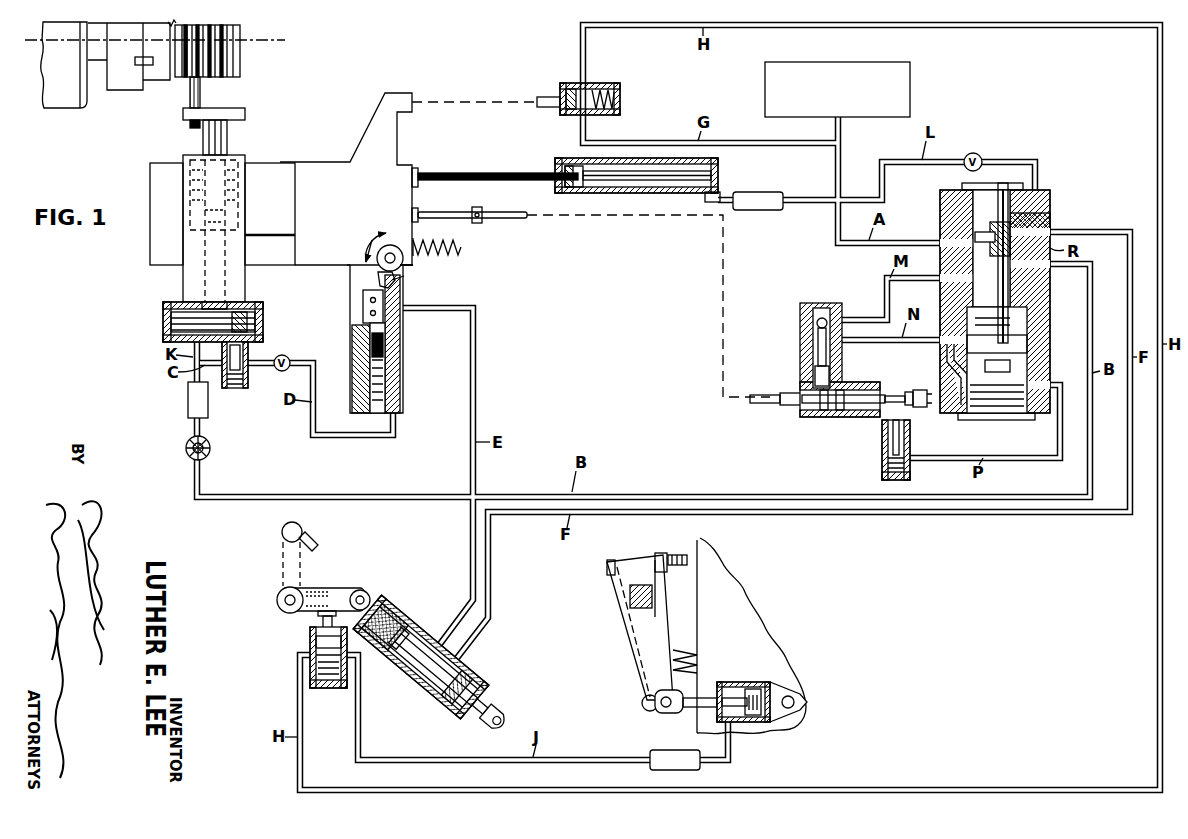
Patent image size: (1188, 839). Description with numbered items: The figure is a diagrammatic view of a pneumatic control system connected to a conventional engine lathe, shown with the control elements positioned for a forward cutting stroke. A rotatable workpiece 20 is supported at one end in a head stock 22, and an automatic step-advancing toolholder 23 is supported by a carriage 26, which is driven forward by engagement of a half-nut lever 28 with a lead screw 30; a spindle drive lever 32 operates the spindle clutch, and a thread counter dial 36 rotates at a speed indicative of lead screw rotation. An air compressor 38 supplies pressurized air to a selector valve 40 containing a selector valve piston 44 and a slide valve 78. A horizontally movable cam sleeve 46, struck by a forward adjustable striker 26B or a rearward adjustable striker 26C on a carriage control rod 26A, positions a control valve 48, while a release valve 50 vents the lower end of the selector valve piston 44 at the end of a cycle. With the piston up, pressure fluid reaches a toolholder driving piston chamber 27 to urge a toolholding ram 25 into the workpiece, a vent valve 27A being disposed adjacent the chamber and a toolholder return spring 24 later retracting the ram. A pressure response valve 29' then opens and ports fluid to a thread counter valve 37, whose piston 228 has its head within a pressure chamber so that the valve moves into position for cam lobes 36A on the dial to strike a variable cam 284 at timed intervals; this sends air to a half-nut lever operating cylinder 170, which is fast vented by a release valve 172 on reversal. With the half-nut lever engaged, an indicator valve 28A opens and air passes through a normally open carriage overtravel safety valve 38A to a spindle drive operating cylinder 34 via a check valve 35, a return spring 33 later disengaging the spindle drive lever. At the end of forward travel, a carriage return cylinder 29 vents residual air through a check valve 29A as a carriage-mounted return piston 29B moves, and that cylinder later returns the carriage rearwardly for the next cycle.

The workpiece 20 is at (228, 78).
The head stock 22 is at (120, 85).
The toolholder 23 is at (172, 200).
The toolholder return spring 24 is at (244, 165).
The toolholding ram 25 is at (200, 138).
The carriage 26 is at (398, 185).
The carriage control rod 26A is at (516, 213).
The forward adjustable striker 26B is at (475, 203).
The rearward adjustable striker 26C is at (916, 390).
The toolholder driving piston chamber 27 is at (175, 326).
The vent valve 27A is at (188, 400).
The half-nut lever 28 is at (334, 597).
The indicator valve 28A is at (310, 637).
The carriage return cylinder 29 is at (637, 199).
The pressure response valve 29' is at (249, 379).
The check valve 29A is at (762, 211).
The return piston 29B is at (578, 192).
The lead screw 30 is at (455, 252).
The spindle drive lever 32 is at (643, 633).
The return spring 33 is at (700, 657).
The spindle drive operating cylinder 34 is at (743, 684).
The check valve 35 is at (658, 750).
The thread counter dial 36 is at (368, 264).
The cam lobes 36A is at (401, 266).
The thread counter valve 37 is at (354, 318).
The air compressor 38 is at (835, 62).
The carriage overtravel safety valve 38A is at (565, 84).
The selector valve 40 is at (1083, 162).
The selector valve piston 44 is at (994, 263).
The cam sleeve 46 is at (846, 412).
The control valve 48 is at (798, 334).
The release valve 50 is at (878, 446).
The slide valve 78 is at (993, 240).
The half-nut lever operating cylinder 170 is at (470, 674).
The release valve 172 is at (390, 683).
The piston 228 is at (364, 348).
The variable cam 284 is at (394, 281).